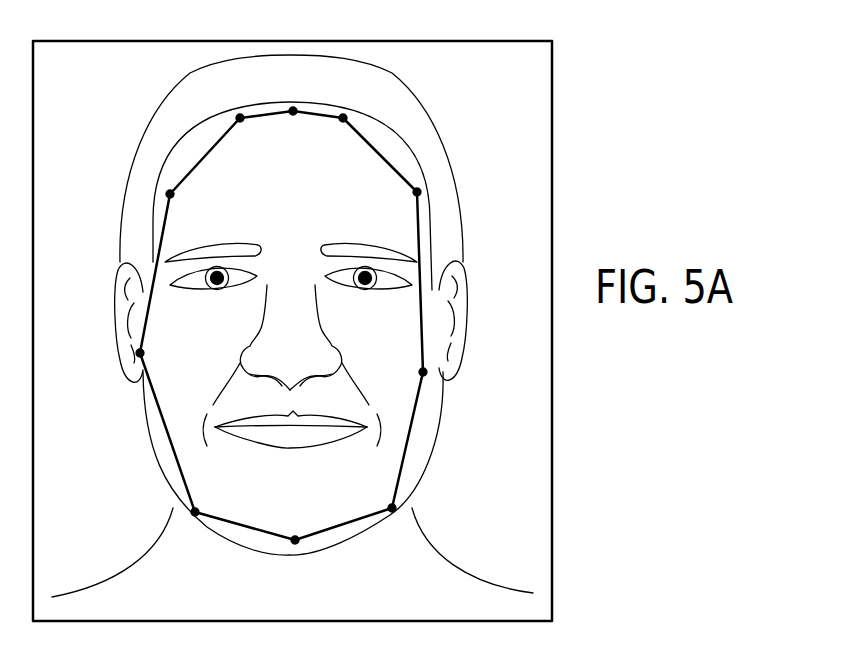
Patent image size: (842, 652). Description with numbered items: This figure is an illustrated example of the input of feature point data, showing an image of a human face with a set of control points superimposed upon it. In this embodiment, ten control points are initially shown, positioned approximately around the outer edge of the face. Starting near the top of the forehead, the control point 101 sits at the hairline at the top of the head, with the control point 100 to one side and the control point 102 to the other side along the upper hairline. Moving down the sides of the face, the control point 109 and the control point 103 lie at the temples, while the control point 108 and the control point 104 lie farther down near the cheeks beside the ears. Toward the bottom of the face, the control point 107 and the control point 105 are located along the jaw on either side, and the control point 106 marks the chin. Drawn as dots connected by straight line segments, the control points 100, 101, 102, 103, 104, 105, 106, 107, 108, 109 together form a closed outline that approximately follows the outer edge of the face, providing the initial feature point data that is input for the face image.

The control point 100 is at (240, 118).
The control point 101 is at (293, 111).
The control point 102 is at (343, 118).
The control point 103 is at (417, 192).
The control point 104 is at (423, 372).
The control point 105 is at (392, 508).
The control point 106 is at (295, 540).
The control point 107 is at (195, 512).
The control point 108 is at (140, 353).
The control point 109 is at (170, 194).